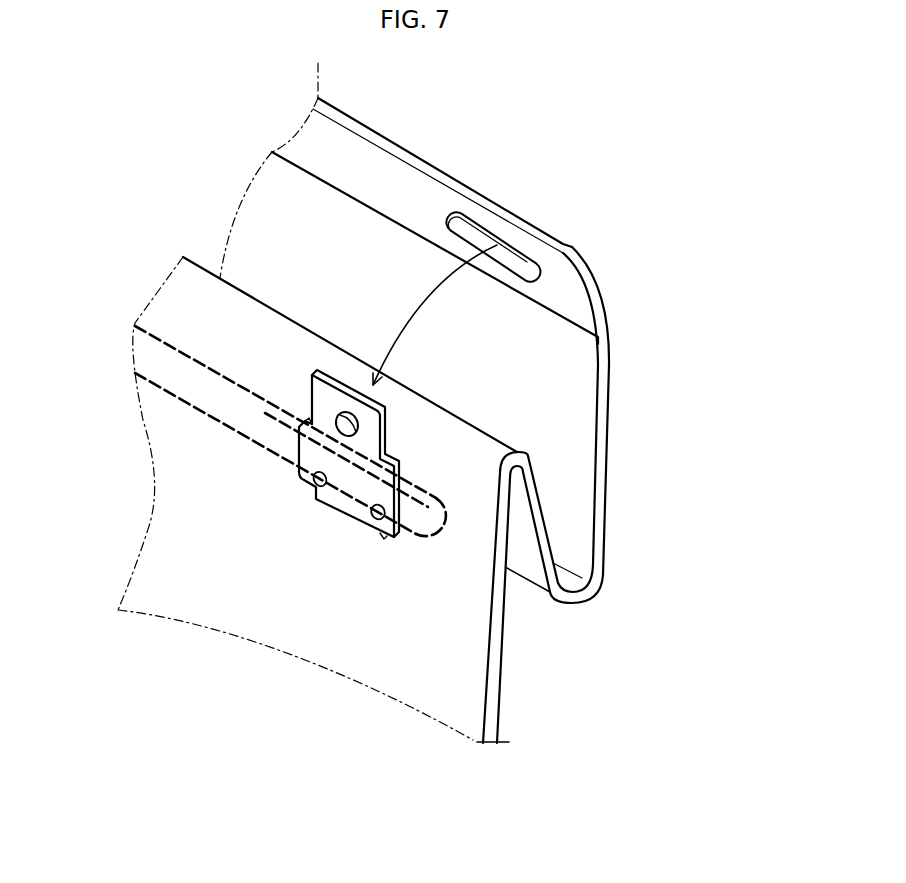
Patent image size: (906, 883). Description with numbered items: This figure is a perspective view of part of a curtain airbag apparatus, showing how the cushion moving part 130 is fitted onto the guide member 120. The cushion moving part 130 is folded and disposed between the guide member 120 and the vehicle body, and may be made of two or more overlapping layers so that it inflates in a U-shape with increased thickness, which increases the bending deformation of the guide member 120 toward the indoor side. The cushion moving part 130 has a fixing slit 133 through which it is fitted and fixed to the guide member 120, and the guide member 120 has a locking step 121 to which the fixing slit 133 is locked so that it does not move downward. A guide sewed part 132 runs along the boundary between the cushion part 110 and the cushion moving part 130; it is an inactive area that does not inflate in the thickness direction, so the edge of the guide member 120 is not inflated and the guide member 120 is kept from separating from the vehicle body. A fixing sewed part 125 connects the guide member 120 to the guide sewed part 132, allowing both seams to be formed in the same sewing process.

The cushion part 110 is at (382, 660).
The guide member 120 is at (236, 467).
The locking step 121 is at (308, 420).
The fixing sewed part 125 is at (350, 480).
The cushion moving part 130 is at (623, 398).
The guide sewed part 132 is at (172, 343).
The fixing slit 133 is at (527, 270).